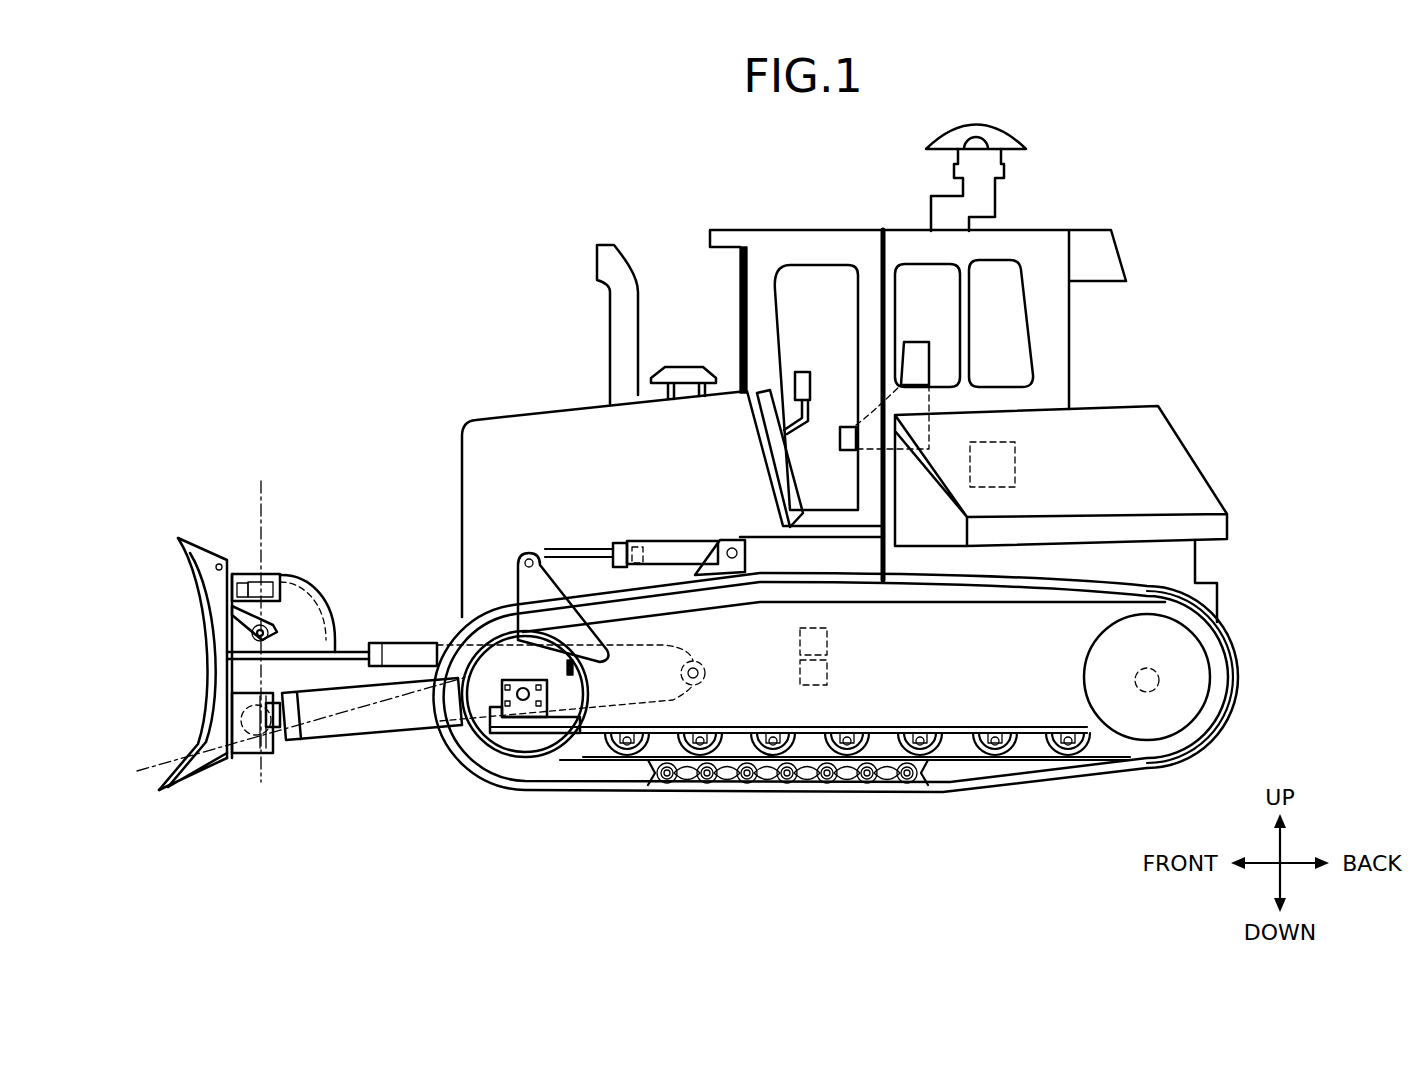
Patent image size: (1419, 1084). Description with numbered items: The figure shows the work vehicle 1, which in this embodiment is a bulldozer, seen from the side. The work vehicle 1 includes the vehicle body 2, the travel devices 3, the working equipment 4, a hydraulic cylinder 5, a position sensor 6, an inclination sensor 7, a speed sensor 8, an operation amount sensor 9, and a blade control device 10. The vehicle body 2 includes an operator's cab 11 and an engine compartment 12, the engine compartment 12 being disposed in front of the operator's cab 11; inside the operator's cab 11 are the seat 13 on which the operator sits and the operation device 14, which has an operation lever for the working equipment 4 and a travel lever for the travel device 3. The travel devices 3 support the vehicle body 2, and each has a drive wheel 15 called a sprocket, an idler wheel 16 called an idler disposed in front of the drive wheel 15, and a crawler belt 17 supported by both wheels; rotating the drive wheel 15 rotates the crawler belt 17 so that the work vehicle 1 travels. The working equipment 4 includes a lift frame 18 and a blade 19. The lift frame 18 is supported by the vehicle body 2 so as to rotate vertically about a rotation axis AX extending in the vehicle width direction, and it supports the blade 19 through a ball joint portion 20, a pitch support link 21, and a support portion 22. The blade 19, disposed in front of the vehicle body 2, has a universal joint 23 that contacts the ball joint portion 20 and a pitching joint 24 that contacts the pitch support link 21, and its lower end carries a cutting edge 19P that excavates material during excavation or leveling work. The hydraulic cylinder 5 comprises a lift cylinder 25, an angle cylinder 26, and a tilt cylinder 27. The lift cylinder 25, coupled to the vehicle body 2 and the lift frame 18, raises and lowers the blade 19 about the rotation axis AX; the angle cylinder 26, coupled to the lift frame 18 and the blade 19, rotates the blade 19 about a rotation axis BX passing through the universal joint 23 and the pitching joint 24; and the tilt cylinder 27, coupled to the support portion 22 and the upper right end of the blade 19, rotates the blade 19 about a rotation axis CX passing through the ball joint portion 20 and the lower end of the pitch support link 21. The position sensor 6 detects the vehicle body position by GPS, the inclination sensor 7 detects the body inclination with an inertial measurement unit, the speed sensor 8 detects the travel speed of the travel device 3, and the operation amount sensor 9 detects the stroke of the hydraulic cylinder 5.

The work vehicle 1 is at (1162, 160).
The vehicle body 2 is at (757, 176).
The travel device 3 is at (1256, 672).
The working equipment 4 is at (342, 564).
The hydraulic cylinder 5 is at (512, 499).
The position sensor 6 is at (829, 640).
The inclination sensor 7 is at (813, 686).
The speed sensor 8 is at (1147, 692).
The operation amount sensor 9 is at (636, 547).
The blade control device 10 is at (1015, 464).
The operator's cab 11 is at (785, 296).
The engine compartment 12 is at (735, 393).
The seat 13 is at (904, 342).
The operation device 14 is at (803, 372).
The drive wheel 15 is at (1213, 677).
The idler wheel 16 is at (497, 735).
The crawler belt 17 is at (1236, 640).
The lift frame 18 is at (387, 735).
The blade 19 is at (205, 552).
The cutting edge 19P is at (159, 793).
The ball joint portion 20 is at (278, 728).
The pitch support link 21 is at (293, 628).
The support portion 22 is at (276, 574).
The universal joint 23 is at (252, 755).
The pitching joint 24 is at (255, 630).
The lift cylinder 25 is at (662, 541).
The angle cylinder 26 is at (421, 643).
The tilt cylinder 27 is at (305, 603).
The rotation axis AX is at (690, 686).
The rotation axis BX is at (258, 482).
The rotation axis CX is at (172, 752).